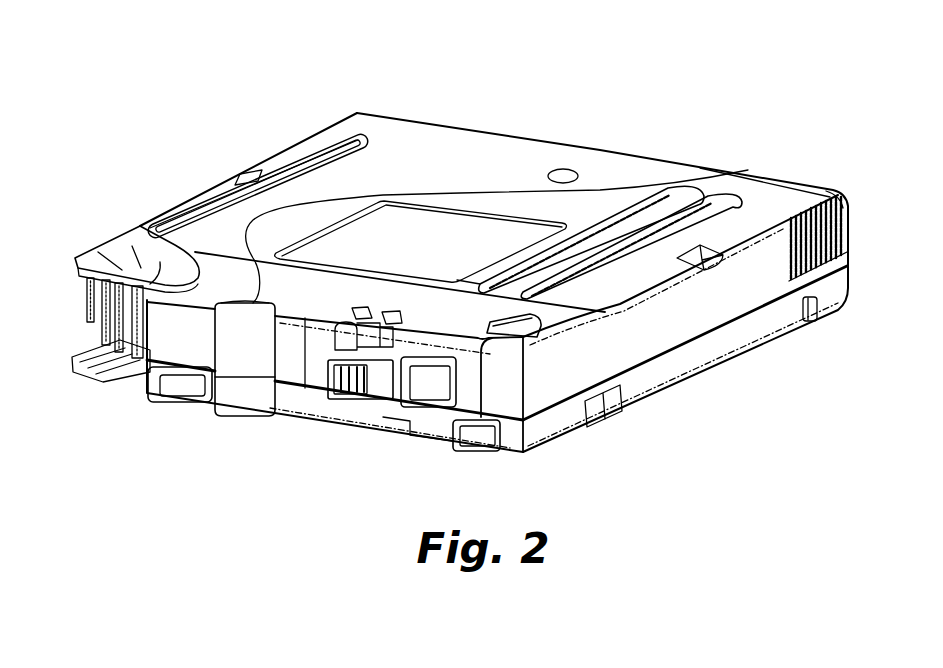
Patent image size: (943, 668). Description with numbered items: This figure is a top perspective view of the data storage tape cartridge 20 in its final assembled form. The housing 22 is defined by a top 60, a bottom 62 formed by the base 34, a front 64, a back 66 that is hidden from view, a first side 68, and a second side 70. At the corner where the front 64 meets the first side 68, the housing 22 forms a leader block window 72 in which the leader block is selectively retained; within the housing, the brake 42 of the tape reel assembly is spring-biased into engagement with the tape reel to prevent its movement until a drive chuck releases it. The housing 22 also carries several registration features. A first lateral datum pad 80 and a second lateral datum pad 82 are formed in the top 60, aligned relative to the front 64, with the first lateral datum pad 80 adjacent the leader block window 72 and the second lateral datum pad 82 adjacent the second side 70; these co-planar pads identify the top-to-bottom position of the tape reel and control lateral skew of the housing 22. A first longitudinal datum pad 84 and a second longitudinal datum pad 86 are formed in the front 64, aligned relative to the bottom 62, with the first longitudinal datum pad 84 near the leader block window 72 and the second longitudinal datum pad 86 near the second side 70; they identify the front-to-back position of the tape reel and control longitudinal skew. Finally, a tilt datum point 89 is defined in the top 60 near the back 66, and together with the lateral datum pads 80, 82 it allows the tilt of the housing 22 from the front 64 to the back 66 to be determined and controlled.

The data storage tape cartridge 20 is at (317, 76).
The housing 22 is at (466, 146).
The base 34 is at (735, 359).
The brake 42 is at (256, 322).
The top 60 is at (600, 162).
The bottom 62 is at (367, 430).
The front 64 is at (321, 408).
The back 66 is at (677, 163).
The first side 68 is at (195, 198).
The second side 70 is at (637, 356).
The leader block window 72 is at (80, 329).
The first lateral datum pad 80 is at (177, 266).
The second lateral datum pad 82 is at (541, 330).
The first longitudinal datum pad 84 is at (176, 390).
The second longitudinal datum pad 86 is at (489, 440).
The tilt datum point 89 is at (566, 170).